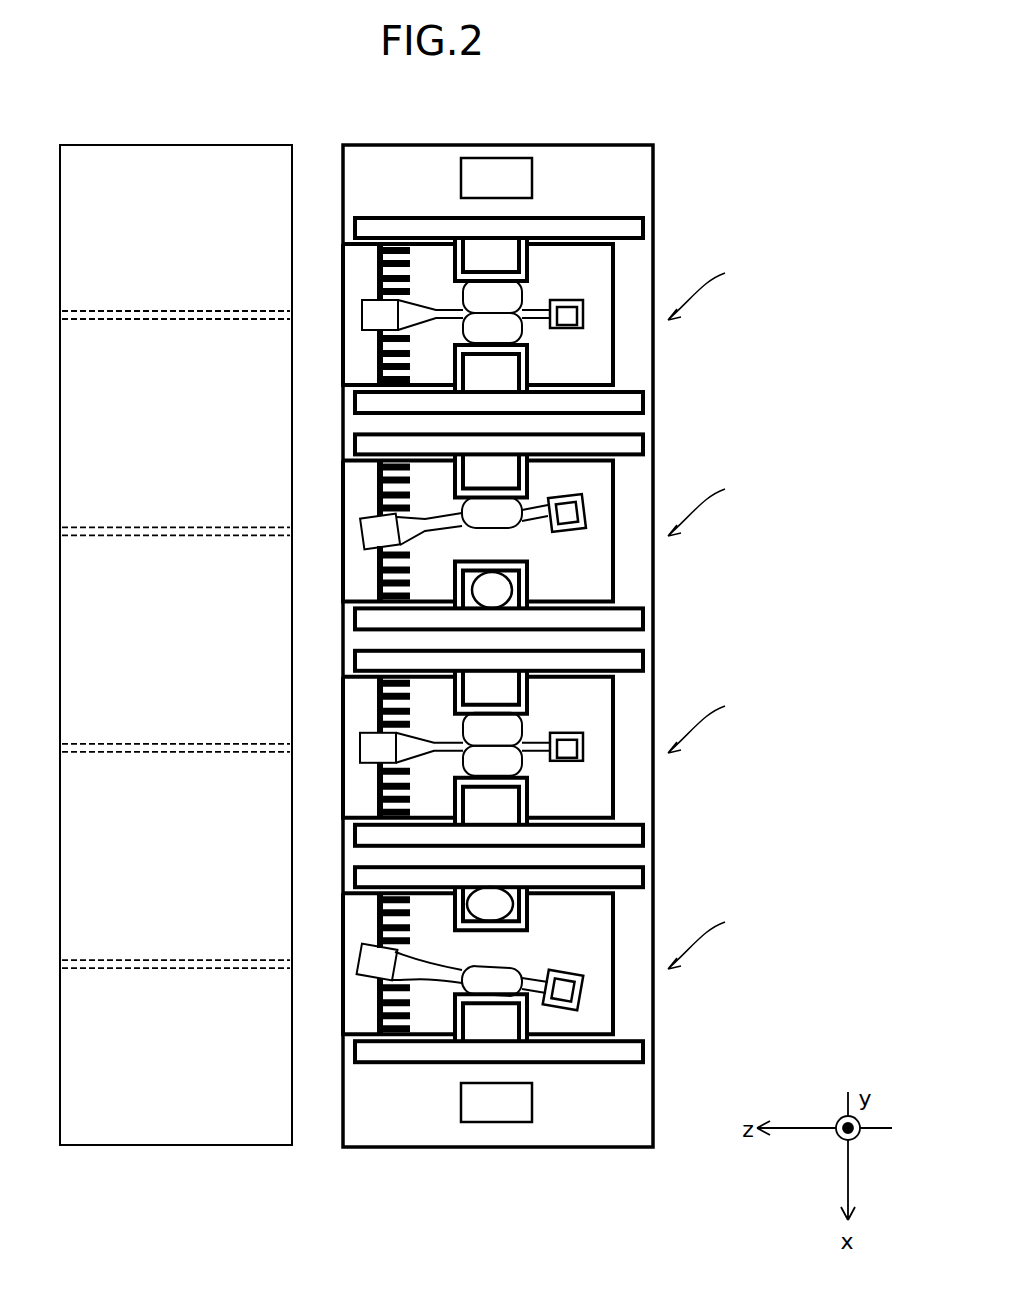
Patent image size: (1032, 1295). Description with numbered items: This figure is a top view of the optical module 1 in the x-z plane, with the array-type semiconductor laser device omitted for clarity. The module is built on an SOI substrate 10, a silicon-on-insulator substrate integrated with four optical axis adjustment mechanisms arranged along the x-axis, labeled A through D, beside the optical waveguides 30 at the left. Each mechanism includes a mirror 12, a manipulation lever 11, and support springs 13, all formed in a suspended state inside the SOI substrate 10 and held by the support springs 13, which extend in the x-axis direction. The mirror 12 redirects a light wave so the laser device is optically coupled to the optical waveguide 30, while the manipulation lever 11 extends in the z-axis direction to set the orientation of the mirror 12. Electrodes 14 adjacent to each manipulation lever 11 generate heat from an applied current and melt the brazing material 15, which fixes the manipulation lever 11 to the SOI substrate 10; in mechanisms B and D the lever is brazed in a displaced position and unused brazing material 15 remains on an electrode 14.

The optical module 1 is at (627, 85).
The SOI substrate 10 is at (643, 170).
The manipulation lever 11 is at (440, 310).
The mirror 12 is at (370, 307).
The support springs 13 is at (408, 272).
The electrode 14 is at (635, 230).
The brazing material 15 is at (517, 327).
The optical waveguides 30 is at (148, 310).